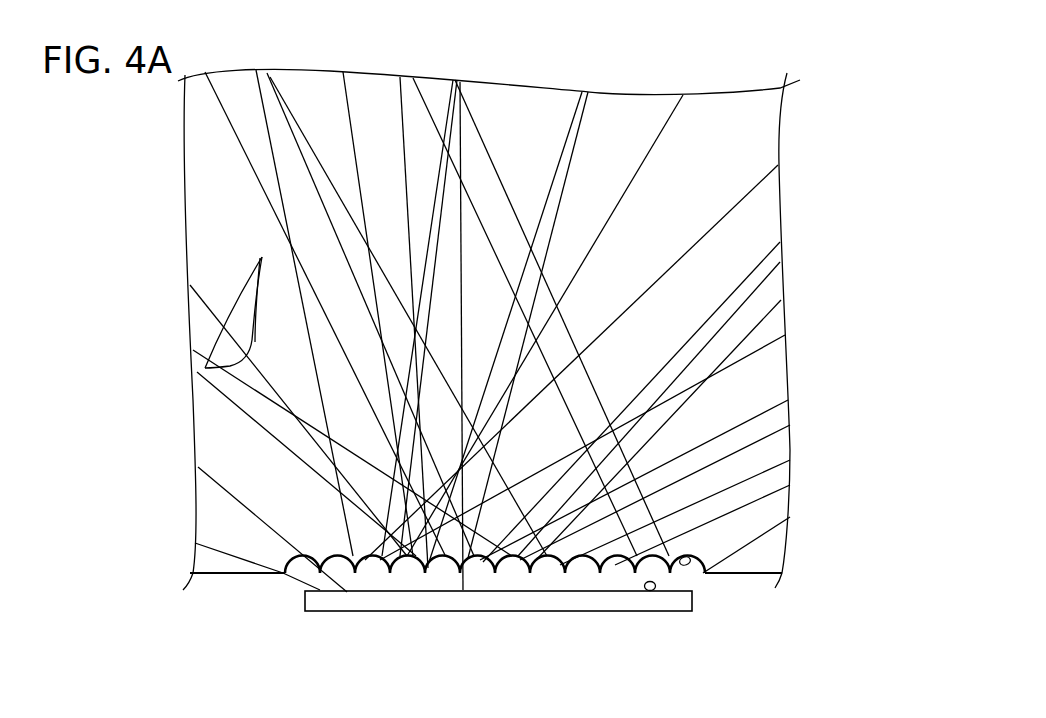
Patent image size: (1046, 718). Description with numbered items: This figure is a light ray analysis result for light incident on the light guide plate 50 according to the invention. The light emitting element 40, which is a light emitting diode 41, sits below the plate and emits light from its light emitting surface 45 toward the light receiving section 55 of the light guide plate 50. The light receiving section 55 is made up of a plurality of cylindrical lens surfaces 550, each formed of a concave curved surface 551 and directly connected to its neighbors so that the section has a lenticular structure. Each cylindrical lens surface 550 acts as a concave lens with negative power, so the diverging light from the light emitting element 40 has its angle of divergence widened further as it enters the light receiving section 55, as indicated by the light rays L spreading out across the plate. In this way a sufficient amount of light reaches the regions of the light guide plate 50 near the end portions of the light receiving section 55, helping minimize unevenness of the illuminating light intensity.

The light emitting element 40 is at (546, 614).
The light emitting diode 41 is at (692, 601).
The light emitting surface 45 is at (655, 590).
The light guide plate 50 is at (207, 566).
The light receiving section 55 is at (536, 550).
The cylindrical lens surface 550 is at (536, 514).
The concave curved surface 551 is at (692, 558).
The light rays L is at (240, 307).